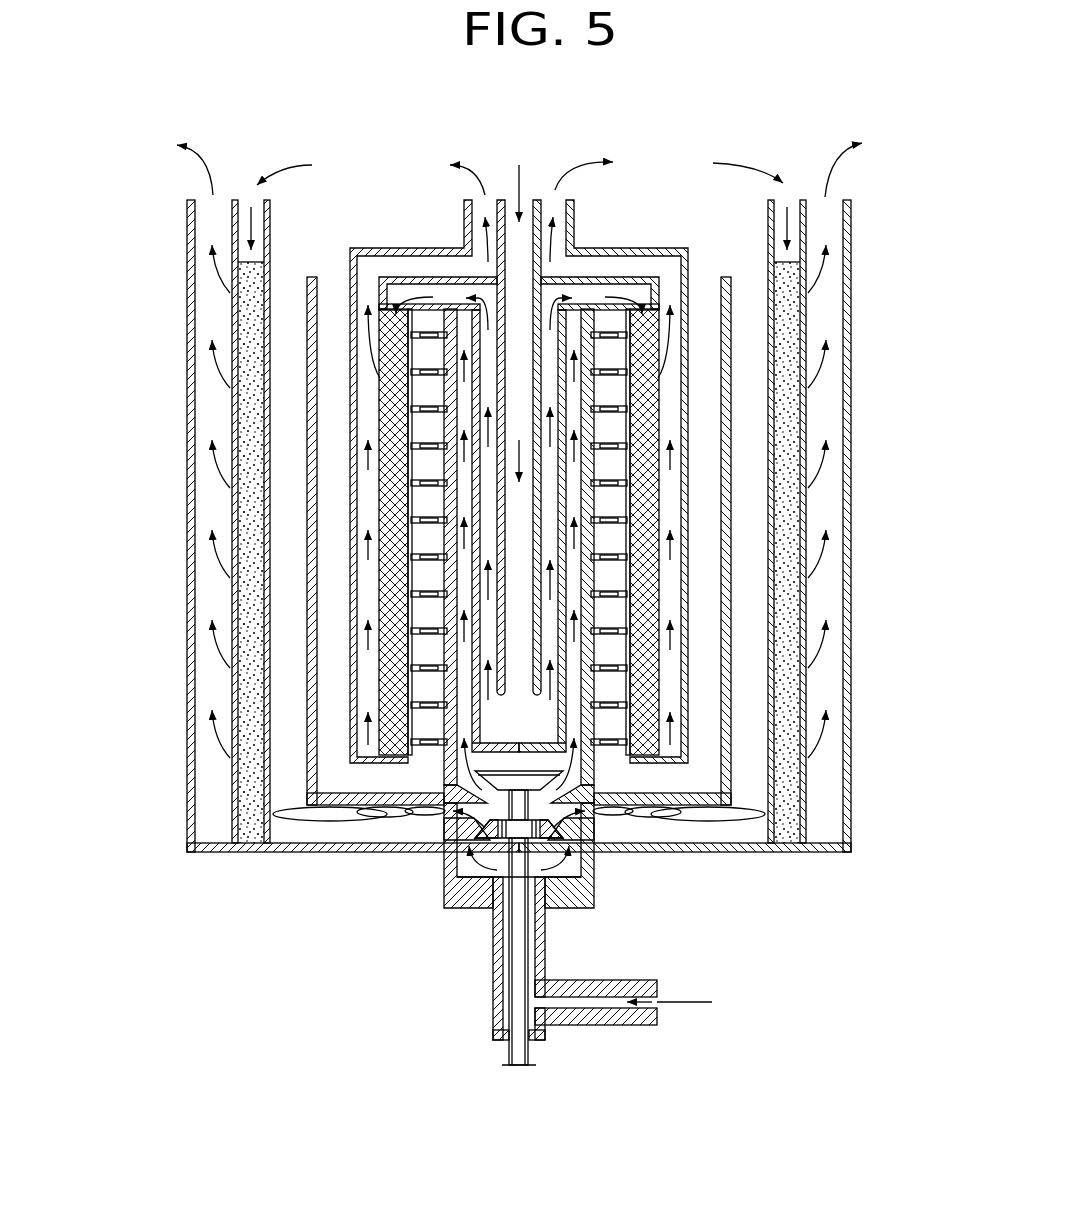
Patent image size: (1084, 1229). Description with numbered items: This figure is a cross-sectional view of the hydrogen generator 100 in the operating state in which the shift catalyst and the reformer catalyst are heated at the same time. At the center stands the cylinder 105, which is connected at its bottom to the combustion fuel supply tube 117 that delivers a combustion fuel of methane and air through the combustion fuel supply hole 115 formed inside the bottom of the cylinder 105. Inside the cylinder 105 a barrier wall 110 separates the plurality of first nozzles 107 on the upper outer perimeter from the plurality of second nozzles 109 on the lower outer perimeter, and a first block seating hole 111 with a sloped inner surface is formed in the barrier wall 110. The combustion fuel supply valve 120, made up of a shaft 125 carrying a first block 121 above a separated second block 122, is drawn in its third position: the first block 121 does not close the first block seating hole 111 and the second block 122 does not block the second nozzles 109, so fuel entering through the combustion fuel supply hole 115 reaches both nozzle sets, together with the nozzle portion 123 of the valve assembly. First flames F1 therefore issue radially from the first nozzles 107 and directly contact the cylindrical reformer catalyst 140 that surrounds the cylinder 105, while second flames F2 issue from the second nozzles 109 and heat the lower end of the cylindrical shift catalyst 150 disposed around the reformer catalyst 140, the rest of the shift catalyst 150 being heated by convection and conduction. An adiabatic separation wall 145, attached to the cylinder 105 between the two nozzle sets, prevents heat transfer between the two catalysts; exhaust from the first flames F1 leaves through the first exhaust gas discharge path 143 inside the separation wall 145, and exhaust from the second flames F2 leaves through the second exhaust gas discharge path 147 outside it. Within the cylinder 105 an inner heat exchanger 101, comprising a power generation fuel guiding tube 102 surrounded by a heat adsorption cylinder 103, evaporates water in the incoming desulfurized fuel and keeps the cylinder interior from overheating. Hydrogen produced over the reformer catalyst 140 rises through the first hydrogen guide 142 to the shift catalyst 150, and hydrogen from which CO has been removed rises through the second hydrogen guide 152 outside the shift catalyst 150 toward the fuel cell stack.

The hydrogen generator 100 is at (133, 293).
The inner heat exchanger 101 is at (432, 177).
The power generation fuel guiding tube 102 is at (500, 258).
The heat adsorption cylinder 103 is at (488, 306).
The cylinder 105 is at (592, 725).
The first nozzles 107 is at (590, 637).
The second nozzles 109 is at (596, 818).
The barrier wall 110 is at (592, 852).
The first block seating hole 111 is at (612, 814).
The combustion fuel supply hole 115 is at (553, 878).
The combustion fuel supply tube 117 is at (603, 1022).
The combustion fuel supply valve 120 is at (353, 874).
The first block 121 is at (441, 832).
The second block 122 is at (445, 868).
The nozzle 123 is at (486, 840).
The shaft 125 is at (520, 974).
The reformer catalyst 140 is at (658, 595).
The first hydrogen guide 142 is at (688, 550).
The first exhaust gas discharge path 143 is at (695, 515).
The separation wall 145 is at (722, 473).
The second exhaust gas discharge path 147 is at (745, 430).
The shift catalyst 150 is at (800, 330).
The second hydrogen guide 152 is at (851, 283).
The first flames F1 is at (603, 380).
The second flames F2 is at (653, 817).